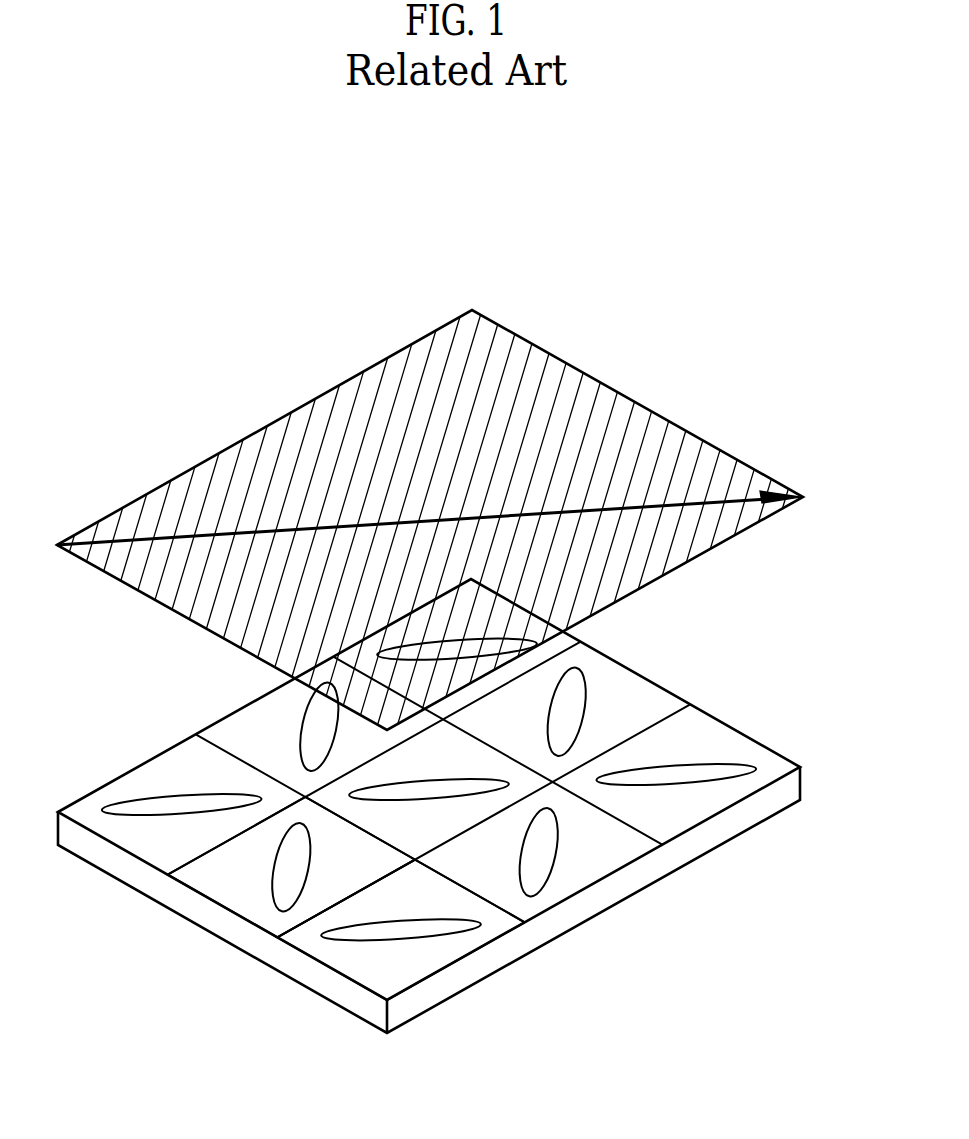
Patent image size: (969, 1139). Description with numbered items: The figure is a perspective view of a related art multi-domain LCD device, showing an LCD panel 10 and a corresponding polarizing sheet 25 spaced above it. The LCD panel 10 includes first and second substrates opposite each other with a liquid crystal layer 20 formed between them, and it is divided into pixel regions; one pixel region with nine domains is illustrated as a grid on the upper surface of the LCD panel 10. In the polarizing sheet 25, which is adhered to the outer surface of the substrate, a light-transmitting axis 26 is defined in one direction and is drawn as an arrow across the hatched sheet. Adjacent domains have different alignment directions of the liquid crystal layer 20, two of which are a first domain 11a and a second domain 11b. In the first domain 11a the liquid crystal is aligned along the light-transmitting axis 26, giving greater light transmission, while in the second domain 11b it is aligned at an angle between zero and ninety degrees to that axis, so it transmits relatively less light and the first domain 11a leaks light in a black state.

The LCD panel 10 is at (732, 840).
The first domain 11a is at (370, 975).
The second domain 11b is at (235, 892).
The liquid crystal layer 20 is at (757, 768).
The polarizing sheet 25 is at (450, 360).
The light-transmitting axis 26 is at (715, 462).